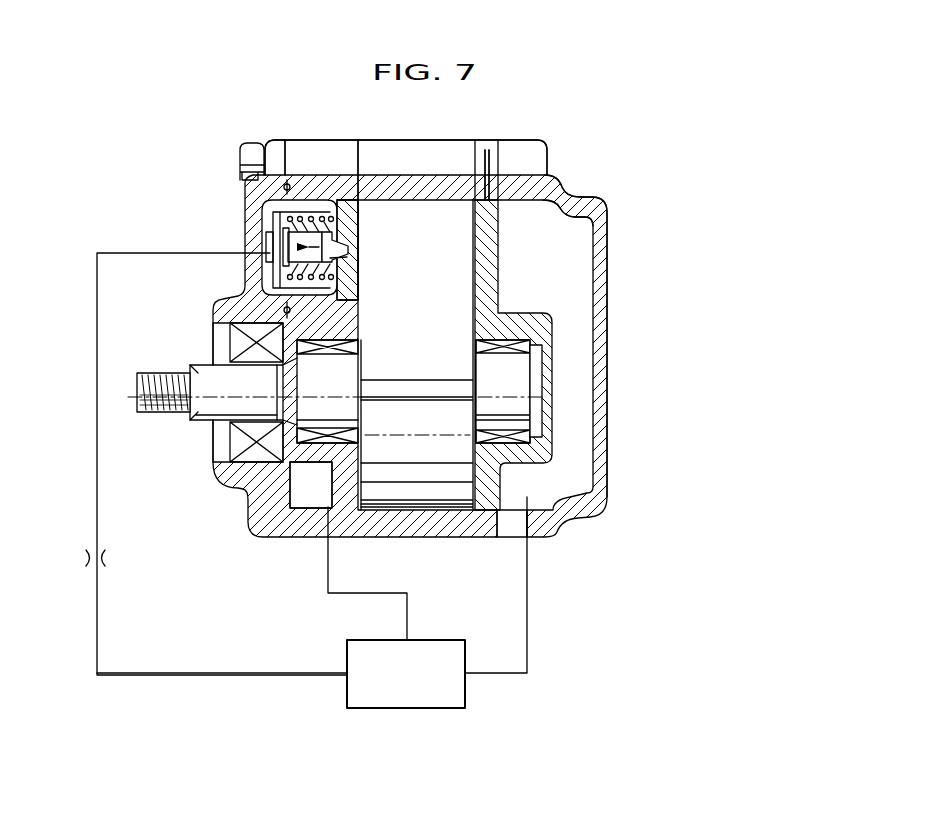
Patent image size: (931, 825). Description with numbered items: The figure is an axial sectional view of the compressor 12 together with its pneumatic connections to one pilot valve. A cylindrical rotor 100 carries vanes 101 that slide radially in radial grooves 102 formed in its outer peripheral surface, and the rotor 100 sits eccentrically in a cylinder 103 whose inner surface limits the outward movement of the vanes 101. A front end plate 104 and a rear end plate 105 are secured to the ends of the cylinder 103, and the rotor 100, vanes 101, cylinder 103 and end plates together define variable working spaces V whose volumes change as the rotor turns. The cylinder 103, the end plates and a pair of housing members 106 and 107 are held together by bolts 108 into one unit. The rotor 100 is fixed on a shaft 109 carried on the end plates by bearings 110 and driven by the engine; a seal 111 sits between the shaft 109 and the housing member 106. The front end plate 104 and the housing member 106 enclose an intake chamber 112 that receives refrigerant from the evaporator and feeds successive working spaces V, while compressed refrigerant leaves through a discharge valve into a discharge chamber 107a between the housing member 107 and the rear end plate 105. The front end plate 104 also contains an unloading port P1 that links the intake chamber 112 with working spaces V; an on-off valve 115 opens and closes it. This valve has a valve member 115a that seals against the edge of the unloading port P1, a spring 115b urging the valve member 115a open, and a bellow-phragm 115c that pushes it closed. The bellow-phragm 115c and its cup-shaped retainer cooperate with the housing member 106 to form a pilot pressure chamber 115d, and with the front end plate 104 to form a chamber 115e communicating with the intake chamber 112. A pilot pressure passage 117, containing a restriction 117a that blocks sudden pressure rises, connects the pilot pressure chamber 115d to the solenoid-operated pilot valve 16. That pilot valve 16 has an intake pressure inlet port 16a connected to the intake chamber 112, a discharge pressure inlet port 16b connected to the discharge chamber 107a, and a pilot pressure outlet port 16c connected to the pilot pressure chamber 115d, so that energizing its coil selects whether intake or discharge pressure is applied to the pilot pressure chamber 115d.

The compressor 12 is at (549, 146).
The solenoid-operated pilot valve 16 is at (312, 626).
The compressor intake pressure inlet port 16a is at (408, 638).
The compressor discharge pressure inlet port 16b is at (466, 678).
The pilot pressure outlet port 16c is at (346, 680).
The rotor 100 is at (474, 297).
The vanes 101 is at (470, 388).
The radial grooves 102 is at (442, 400).
The cylinder 103 is at (452, 182).
The front end plate 104 is at (340, 182).
The rear end plate 105 is at (488, 184).
The housing member 106 is at (278, 183).
The housing member 107 is at (560, 192).
The discharge chamber 107a is at (582, 220).
The bolts 108 is at (243, 152).
The shaft 109 is at (202, 368).
The bearings 110 is at (322, 442).
The seal 111 is at (228, 436).
The intake chamber 112 is at (323, 198).
The on-off valve 115 is at (291, 261).
The valve member 115a is at (338, 236).
The spring 115b is at (335, 280).
The bellow-phragm 115c is at (272, 292).
The pilot pressure chamber 115d is at (268, 213).
The chamber 115e is at (352, 306).
The pilot pressure passage 117 is at (183, 488).
The restriction 117a is at (90, 568).
The unloading port P1 is at (358, 249).
The working spaces V is at (466, 233).